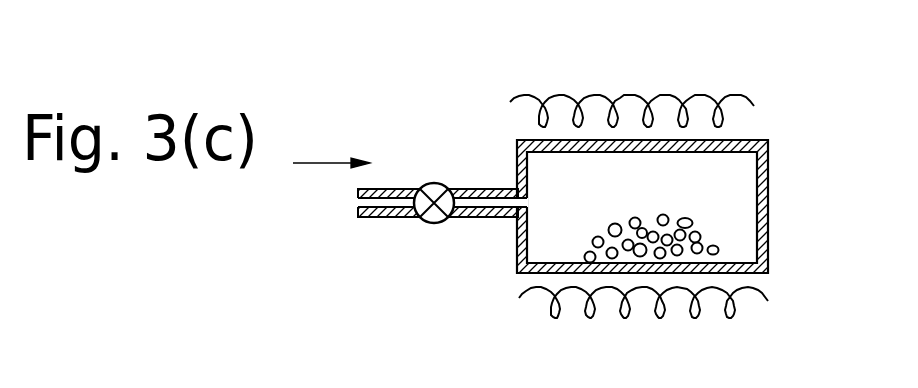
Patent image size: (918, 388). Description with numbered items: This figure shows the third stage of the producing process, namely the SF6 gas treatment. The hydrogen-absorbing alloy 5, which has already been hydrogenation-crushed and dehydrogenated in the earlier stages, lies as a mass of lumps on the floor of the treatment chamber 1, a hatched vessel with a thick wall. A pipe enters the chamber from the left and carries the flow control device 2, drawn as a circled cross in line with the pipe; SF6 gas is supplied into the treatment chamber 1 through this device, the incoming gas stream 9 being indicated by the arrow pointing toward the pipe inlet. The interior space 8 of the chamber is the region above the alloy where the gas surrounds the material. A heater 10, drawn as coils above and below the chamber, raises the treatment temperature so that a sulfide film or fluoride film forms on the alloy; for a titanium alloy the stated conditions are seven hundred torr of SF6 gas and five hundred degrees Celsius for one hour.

The treatment chamber 1 is at (768, 258).
The flow control device 2 is at (425, 223).
The hydrogen-absorbing alloy 5 is at (700, 229).
The interior space of container 8 is at (732, 172).
The gas flow 9 is at (333, 163).
The heater 10 is at (743, 102).